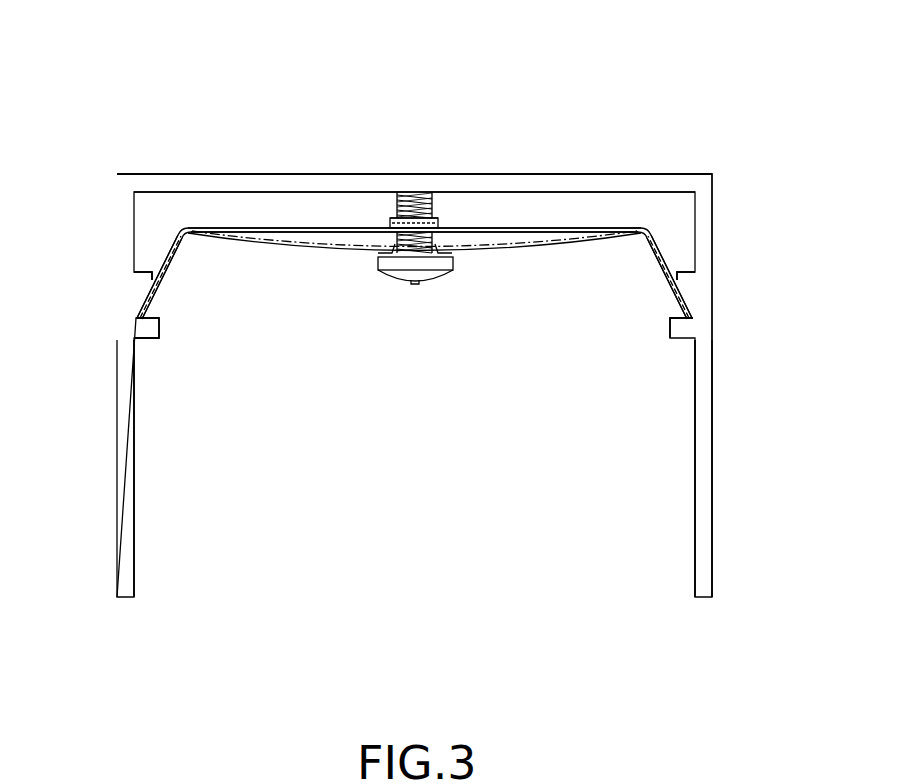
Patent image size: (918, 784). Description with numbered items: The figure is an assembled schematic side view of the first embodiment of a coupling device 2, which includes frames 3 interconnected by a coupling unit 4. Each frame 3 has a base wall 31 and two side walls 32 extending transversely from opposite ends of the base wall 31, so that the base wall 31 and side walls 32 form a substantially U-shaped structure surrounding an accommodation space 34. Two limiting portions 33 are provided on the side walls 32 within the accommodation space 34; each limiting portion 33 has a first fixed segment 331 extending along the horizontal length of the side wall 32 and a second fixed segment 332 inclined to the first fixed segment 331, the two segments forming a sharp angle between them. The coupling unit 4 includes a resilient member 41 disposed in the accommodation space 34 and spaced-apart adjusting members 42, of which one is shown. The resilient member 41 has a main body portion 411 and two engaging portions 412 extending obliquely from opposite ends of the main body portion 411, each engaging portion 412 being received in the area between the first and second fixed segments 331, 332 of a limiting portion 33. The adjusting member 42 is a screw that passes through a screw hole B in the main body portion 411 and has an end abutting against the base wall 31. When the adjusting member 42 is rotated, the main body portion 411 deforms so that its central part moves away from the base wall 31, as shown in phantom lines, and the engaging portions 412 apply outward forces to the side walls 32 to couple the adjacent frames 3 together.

The coupling device 2 is at (450, 137).
The frame 3 is at (125, 174).
The base wall 31 is at (200, 174).
The side wall 32 is at (115, 421).
The limiting portion 33 is at (172, 345).
The first fixed segment 331 is at (148, 339).
The second fixed segment 332 is at (145, 275).
The accommodation space 34 is at (340, 535).
The coupling unit 4 is at (414, 227).
The resilient member 41 is at (318, 227).
The main body portion 411 is at (280, 226).
The engaging portion 412 is at (160, 285).
The adjusting member 42 is at (431, 275).
The screw hole B is at (432, 219).